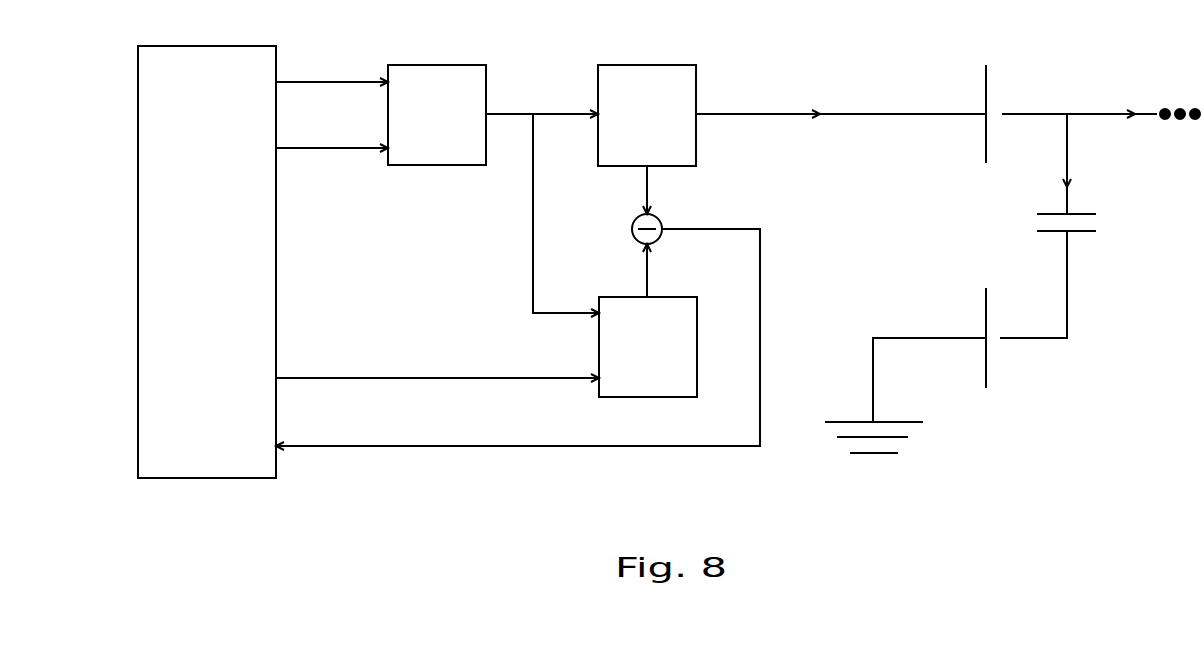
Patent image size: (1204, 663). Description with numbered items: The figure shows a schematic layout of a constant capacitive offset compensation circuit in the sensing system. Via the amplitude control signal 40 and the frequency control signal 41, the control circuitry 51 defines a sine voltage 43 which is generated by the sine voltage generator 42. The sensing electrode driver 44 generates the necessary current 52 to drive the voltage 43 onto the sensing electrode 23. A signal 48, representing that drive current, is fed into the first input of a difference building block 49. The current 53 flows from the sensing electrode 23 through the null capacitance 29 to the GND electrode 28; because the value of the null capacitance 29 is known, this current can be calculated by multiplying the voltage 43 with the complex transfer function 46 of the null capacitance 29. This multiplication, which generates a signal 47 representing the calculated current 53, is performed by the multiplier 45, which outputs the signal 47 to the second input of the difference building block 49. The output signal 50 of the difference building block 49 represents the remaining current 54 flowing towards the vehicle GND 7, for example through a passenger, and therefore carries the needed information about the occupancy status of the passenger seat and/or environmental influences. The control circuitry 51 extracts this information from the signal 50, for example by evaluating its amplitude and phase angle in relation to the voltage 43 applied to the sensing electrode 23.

The vehicle GND 7 is at (875, 447).
The sensing electrode 23 is at (1005, 114).
The GND electrode 28 is at (948, 351).
The null capacitance 29 is at (1066, 273).
The amplitude control signal 40 is at (332, 69).
The frequency control signal 41 is at (332, 135).
The sine voltage generator 42 is at (437, 115).
The sine voltage 43 is at (623, 199).
The sensing electrode driver 44 is at (647, 115).
The multiplier 45 is at (648, 347).
The complex transfer function of the null capacitance 46 is at (437, 362).
The equivalent for the calculated capacitive current through the null capacitance 47 is at (665, 268).
The equivalent for the capacitive current flowing in the sensing electrode 48 is at (667, 190).
The difference building block 49 is at (628, 229).
The difference between the sensing electrode current signal and the calculated curre 50 is at (518, 339).
The control circuitry 51 is at (207, 262).
The current necessary to drive the sensing electrode 52 is at (873, 99).
The current flowing through the null capacitance 53 is at (1049, 164).
The current flowing towards vehicle GND 54 is at (1101, 100).